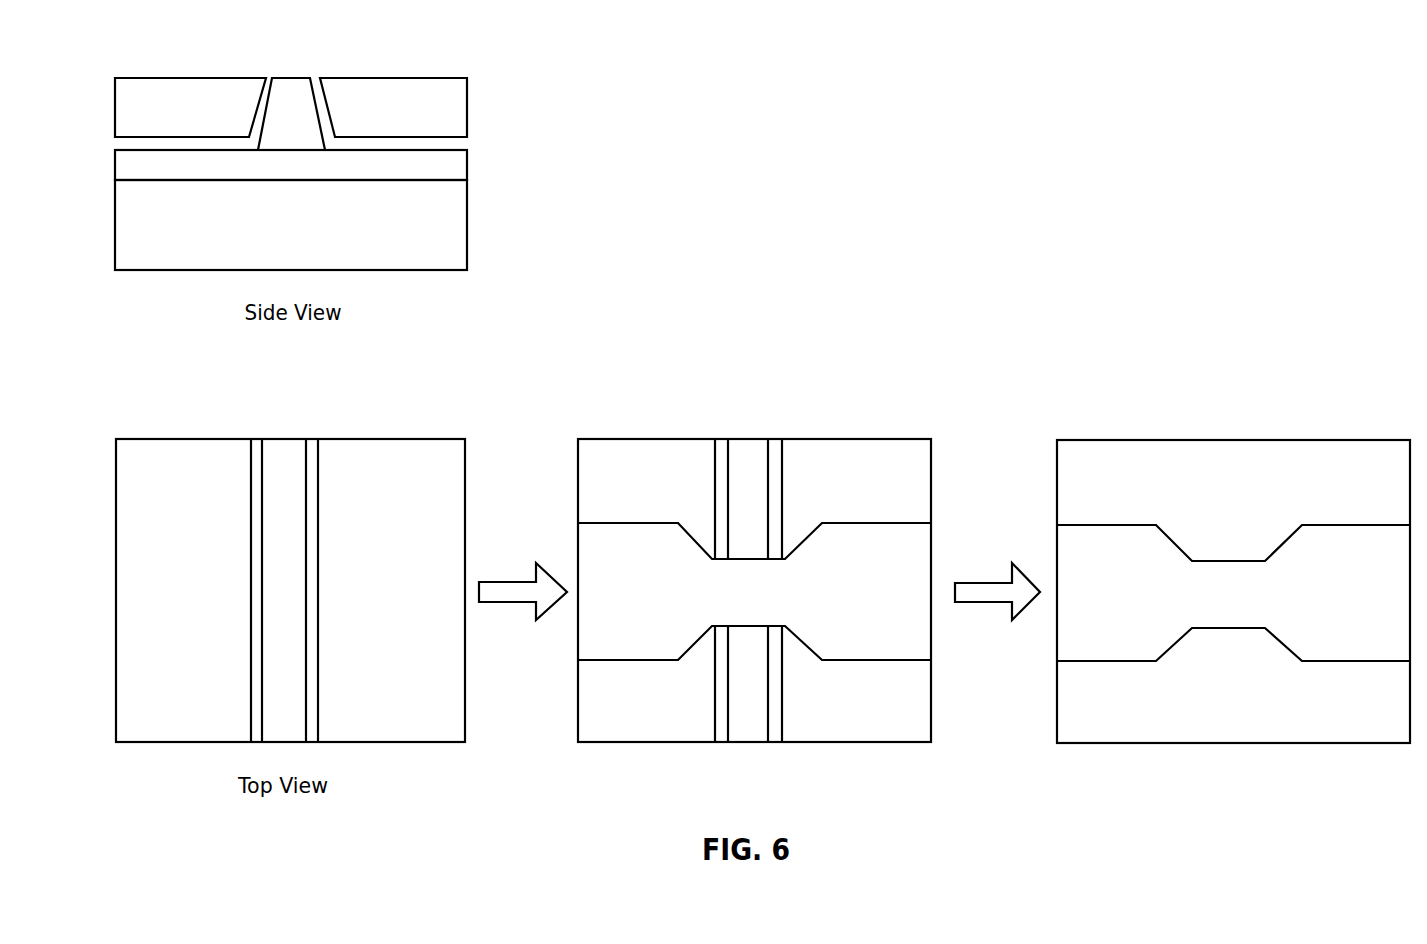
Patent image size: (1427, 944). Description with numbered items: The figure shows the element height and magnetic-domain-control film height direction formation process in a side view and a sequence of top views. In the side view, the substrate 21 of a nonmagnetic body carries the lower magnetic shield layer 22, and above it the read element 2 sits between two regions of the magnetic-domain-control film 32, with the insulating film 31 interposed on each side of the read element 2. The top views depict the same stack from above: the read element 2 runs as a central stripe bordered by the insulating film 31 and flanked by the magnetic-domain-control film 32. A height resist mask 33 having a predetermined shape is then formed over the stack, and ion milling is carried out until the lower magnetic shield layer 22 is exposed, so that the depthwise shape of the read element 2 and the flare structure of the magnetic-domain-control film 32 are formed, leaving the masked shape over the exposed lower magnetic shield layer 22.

The read element 2 is at (286, 123).
The substrate 21 is at (280, 243).
The lower magnetic shield layer 22 is at (280, 176).
The insulating film 31 is at (266, 78).
The magnetic-domain-control film 32 is at (176, 121).
The height resist mask 33 is at (845, 604).